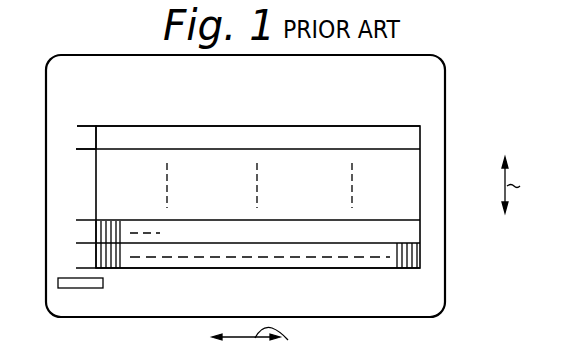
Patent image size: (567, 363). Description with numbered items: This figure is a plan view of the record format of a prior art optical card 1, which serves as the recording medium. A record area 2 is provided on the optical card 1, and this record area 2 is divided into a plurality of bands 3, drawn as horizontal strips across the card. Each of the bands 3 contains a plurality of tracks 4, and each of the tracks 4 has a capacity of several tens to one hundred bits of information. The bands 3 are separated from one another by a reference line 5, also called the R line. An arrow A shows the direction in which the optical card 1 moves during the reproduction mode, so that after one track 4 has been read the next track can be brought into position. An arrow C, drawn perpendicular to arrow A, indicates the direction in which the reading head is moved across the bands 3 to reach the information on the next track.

The optical card 1 is at (445, 282).
The record area 2 is at (420, 176).
The bands 3 is at (415, 134).
The tracks 4 is at (120, 262).
The reference line (R line) 5 is at (88, 125).
The arrow A is at (260, 341).
The arrow C is at (521, 185).